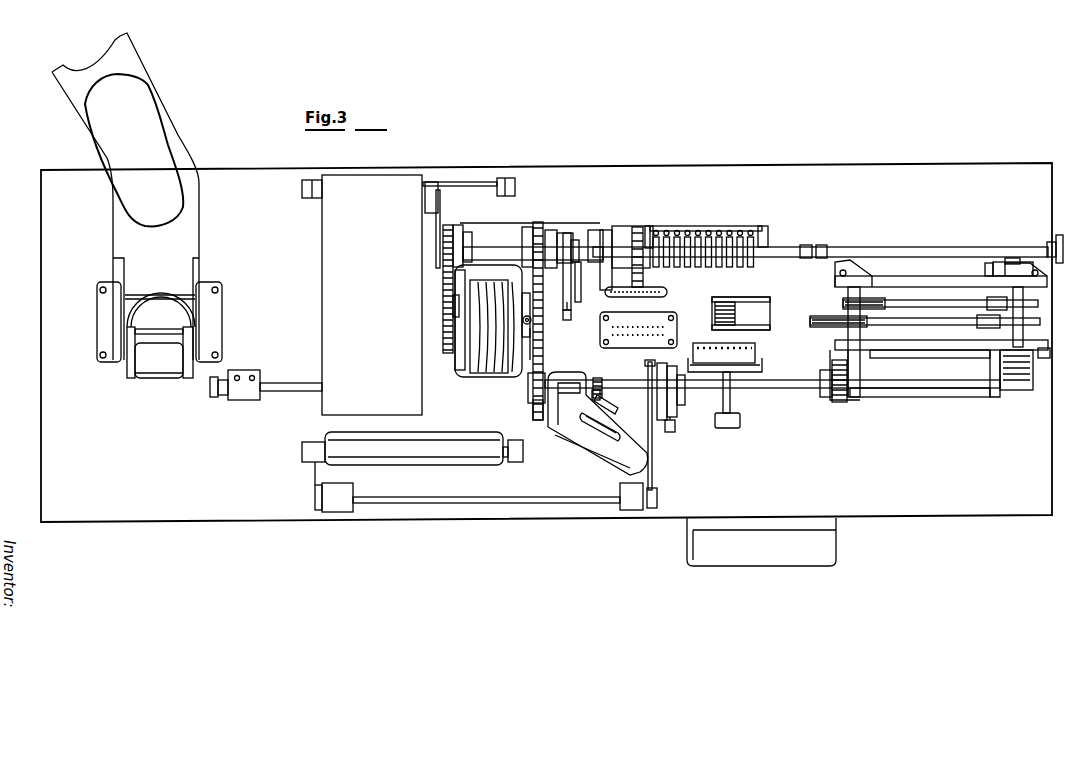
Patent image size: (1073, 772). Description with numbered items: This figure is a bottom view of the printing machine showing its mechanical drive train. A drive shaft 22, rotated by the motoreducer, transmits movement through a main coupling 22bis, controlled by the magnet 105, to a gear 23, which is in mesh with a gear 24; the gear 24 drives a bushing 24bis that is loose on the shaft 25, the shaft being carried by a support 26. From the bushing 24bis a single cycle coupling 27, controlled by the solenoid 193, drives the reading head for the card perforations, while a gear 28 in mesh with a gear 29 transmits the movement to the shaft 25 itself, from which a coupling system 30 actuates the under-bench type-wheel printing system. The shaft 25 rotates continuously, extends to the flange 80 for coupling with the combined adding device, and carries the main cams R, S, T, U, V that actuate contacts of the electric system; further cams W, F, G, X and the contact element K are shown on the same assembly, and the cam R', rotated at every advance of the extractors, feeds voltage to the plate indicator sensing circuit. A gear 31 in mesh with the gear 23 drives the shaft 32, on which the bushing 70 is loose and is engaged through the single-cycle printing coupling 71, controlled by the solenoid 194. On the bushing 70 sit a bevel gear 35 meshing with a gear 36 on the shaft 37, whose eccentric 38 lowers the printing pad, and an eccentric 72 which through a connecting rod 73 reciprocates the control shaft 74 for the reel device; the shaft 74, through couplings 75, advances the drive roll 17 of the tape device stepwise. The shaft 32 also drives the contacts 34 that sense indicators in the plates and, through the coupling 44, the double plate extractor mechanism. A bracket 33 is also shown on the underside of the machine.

The drive roll 17 is at (343, 452).
The drive shaft 22 is at (450, 332).
The main coupling 22bis is at (530, 332).
The gear 23 is at (540, 323).
The gear 24 is at (548, 250).
The bushing 24bis is at (556, 262).
The shaft 25 is at (838, 252).
The support 26 is at (510, 232).
The single cycle coupling 27 is at (572, 285).
The gear 28 is at (445, 303).
The gear 29 is at (443, 272).
The coupling system 30 is at (436, 222).
The gear 31 is at (540, 415).
The shaft 32 is at (763, 388).
The bracket 33 is at (132, 345).
The contacts 34 is at (755, 352).
The bevel gear 35 is at (595, 402).
The gear 36 is at (618, 410).
The shaft 37 is at (600, 440).
The eccentric 38 is at (612, 446).
The coupling 44 is at (832, 400).
The bushing 70 is at (615, 378).
The single-cycle coupling 71 is at (673, 363).
The eccentric 72 is at (652, 408).
The connecting rod 73 is at (652, 472).
The control shaft 74 is at (563, 497).
The couplings 75 is at (313, 483).
The flange 80 is at (1055, 240).
The magnet 105 is at (533, 330).
The solenoid 193 is at (570, 317).
The solenoid 194 is at (673, 432).
The main cam R is at (652, 262).
The main cam S is at (666, 268).
The main cam T is at (677, 268).
The main cam U is at (687, 268).
The main cam V is at (698, 268).
The disk W is at (708, 268).
The disk F is at (719, 268).
The disk G is at (729, 268).
The disk X is at (740, 268).
The contact K is at (1007, 263).
The cam R' is at (977, 271).